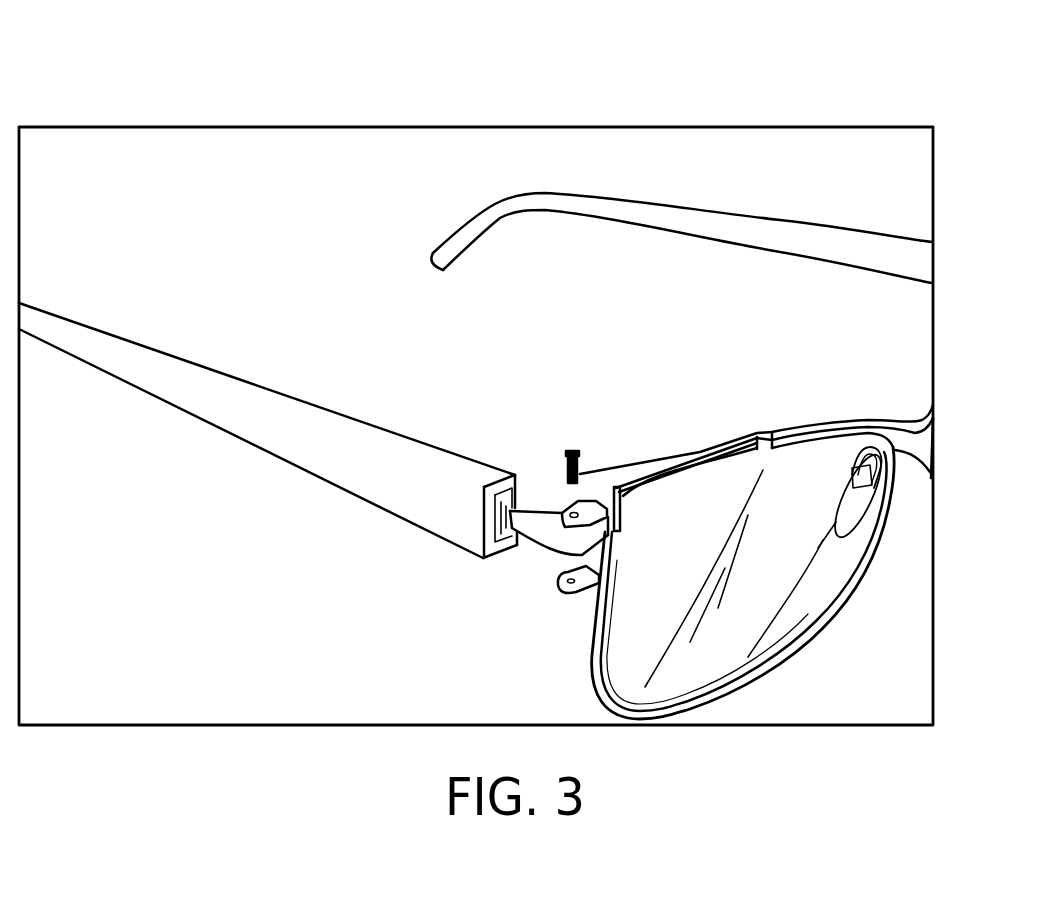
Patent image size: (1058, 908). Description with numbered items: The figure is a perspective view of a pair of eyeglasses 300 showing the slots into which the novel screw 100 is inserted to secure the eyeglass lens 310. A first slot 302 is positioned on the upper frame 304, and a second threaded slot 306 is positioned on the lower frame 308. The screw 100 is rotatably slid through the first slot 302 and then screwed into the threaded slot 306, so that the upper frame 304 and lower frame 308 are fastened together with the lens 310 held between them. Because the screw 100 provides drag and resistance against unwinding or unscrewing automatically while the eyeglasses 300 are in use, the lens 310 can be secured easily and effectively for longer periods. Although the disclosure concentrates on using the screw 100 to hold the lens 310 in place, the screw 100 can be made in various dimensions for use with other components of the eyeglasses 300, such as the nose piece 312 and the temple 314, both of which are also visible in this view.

The eyeglasses 300 is at (365, 230).
The screw 100 is at (562, 512).
The first slot 302 is at (560, 512).
The upper frame 304 is at (620, 473).
The second threaded slot 306 is at (572, 597).
The lower frame 308 is at (718, 706).
The lens 310 is at (787, 600).
The nose piece 312 is at (863, 497).
The temple 314 is at (340, 468).